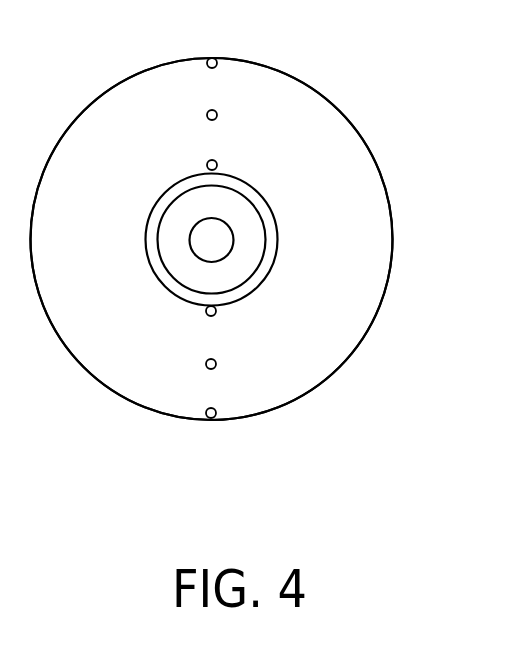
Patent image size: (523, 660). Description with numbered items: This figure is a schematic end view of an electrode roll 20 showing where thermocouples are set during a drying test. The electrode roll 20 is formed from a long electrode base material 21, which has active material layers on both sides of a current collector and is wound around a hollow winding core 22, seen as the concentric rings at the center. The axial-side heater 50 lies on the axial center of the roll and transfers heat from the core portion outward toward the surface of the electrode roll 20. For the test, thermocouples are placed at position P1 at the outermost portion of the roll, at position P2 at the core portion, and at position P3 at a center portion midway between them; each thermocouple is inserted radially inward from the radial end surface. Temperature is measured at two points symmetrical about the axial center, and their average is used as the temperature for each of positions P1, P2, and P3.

The electrode roll 20 is at (345, 108).
The electrode base material 21 is at (362, 172).
The winding core 22 is at (267, 236).
The axial-side heater 50 is at (192, 237).
The position P1 is at (215, 60).
The position P2 is at (215, 162).
The position P3 is at (218, 113).